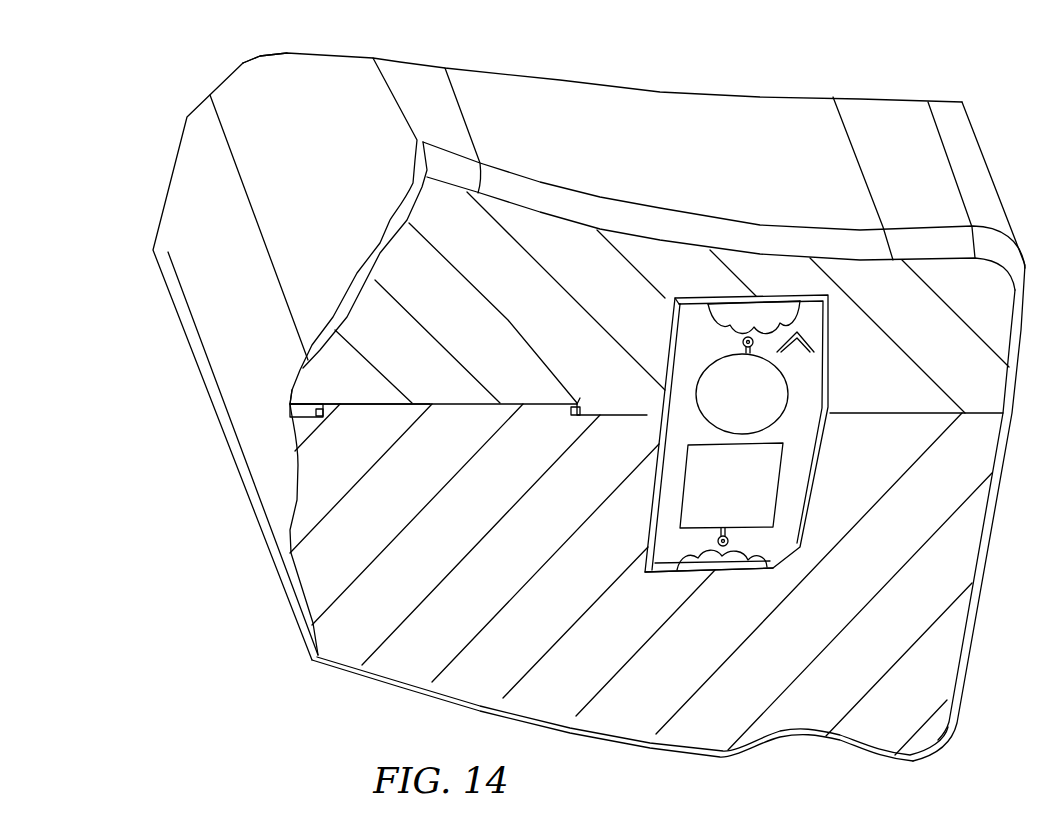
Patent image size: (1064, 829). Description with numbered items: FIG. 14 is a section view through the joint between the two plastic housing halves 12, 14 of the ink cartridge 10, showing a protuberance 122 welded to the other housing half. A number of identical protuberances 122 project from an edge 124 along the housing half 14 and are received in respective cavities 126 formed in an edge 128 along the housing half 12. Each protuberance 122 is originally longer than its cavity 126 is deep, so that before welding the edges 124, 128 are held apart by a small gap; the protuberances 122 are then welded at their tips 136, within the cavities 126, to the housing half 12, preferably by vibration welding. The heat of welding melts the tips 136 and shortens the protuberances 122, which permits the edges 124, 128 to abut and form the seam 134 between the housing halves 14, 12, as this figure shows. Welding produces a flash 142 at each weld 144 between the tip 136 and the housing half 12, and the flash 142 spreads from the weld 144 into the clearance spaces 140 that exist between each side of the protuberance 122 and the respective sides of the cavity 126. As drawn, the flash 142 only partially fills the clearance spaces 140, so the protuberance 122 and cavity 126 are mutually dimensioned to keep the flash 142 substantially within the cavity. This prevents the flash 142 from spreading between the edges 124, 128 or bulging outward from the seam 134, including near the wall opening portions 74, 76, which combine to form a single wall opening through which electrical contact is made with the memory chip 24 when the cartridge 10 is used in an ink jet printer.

The cartridge 10 is at (136, 119).
The housing half 12 is at (242, 61).
The housing half 14 is at (190, 189).
The memory chip 24 is at (793, 447).
The wall opening portion 74 is at (677, 355).
The wall opening portion 76 is at (653, 513).
The protuberance 122 is at (389, 416).
The edge 124 is at (627, 417).
The cavity 126 is at (470, 407).
The edge 128 is at (617, 413).
The seam 134 is at (296, 438).
The tip 136 is at (540, 403).
The clearance space 140 is at (323, 417).
The flash 142 is at (290, 404).
The weld 144 is at (337, 403).